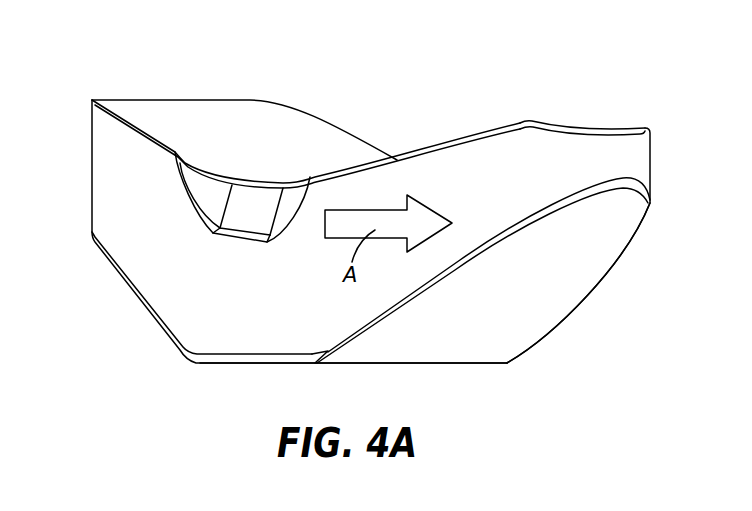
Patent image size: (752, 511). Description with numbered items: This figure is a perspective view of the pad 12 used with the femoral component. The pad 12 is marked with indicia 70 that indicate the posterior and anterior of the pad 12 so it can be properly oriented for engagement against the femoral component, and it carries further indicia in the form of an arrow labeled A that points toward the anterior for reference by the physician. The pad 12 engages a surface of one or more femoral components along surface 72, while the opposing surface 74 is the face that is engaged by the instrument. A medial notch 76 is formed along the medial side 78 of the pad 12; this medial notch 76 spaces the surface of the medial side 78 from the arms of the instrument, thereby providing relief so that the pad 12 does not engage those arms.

The pad 12 is at (578, 82).
The indicia 70 is at (583, 257).
The surface 72 is at (208, 112).
The opposing surface 74 is at (408, 366).
The medial notch 76 is at (249, 212).
The medial side 78 is at (148, 249).